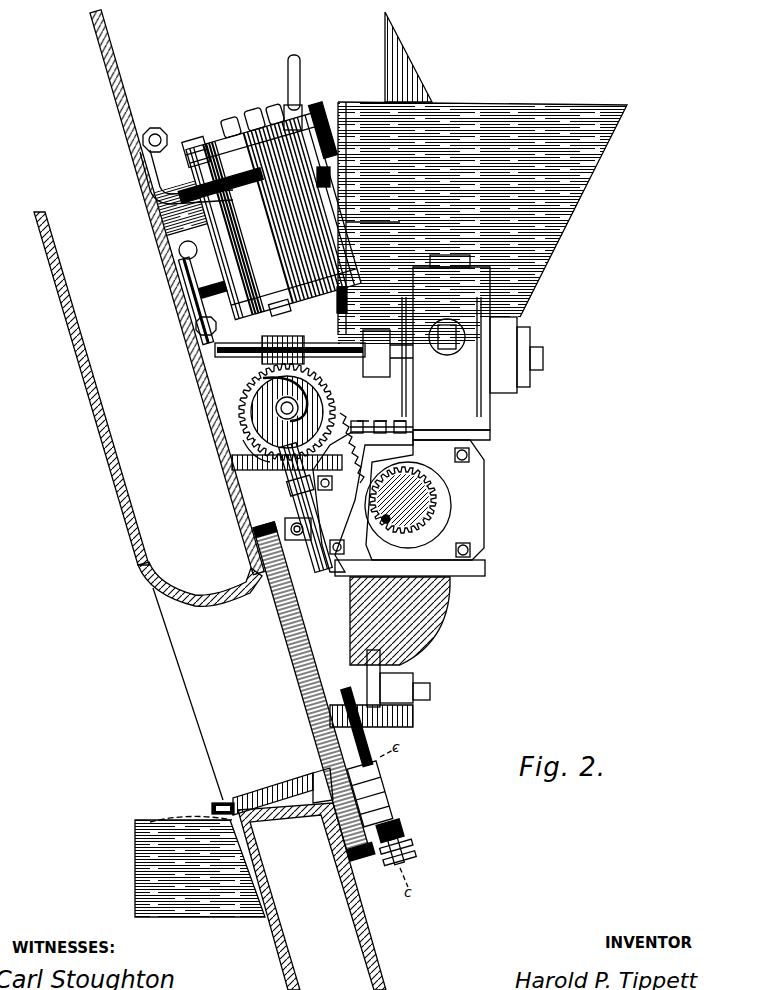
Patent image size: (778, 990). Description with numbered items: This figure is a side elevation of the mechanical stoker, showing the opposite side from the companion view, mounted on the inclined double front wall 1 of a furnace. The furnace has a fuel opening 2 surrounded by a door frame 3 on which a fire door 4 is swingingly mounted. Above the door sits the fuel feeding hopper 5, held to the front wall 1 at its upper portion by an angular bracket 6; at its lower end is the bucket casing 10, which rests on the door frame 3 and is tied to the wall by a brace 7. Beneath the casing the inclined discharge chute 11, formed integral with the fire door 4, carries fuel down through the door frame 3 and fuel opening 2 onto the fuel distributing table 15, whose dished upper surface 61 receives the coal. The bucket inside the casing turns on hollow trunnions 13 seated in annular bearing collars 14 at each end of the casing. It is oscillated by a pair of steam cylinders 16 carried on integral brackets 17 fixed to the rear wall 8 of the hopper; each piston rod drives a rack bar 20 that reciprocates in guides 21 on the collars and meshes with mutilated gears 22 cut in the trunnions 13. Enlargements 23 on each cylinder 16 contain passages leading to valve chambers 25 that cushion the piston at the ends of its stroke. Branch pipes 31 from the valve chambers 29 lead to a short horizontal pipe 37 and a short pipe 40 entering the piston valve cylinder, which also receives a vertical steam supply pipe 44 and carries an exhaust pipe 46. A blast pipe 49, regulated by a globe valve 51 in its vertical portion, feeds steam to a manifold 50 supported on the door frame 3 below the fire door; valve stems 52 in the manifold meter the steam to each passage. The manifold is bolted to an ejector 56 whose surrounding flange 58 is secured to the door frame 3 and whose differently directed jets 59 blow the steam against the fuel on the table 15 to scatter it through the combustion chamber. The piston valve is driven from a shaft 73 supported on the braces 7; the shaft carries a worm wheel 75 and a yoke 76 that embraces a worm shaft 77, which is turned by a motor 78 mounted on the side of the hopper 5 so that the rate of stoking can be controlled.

The double front wall 1 is at (210, 382).
The fuel opening 2 is at (269, 789).
The door frame 3 is at (284, 648).
The fire door 4 is at (358, 665).
The fuel feeding hopper 5 is at (482, 178).
The angular bracket 6 is at (175, 214).
The brace 7 is at (292, 478).
The rear wall of the hopper 8 is at (346, 262).
The bucket casing 10 is at (470, 497).
The discharge chute 11 is at (425, 614).
The hollow trunnions 13 is at (418, 505).
The annular bearing collars 14 is at (432, 478).
The fuel distributing table 15 is at (152, 860).
The steam cylinders 16 is at (264, 219).
The integral brackets 17 is at (385, 150).
The rack bars 20 is at (360, 444).
The guides 21 is at (363, 502).
The mutilated gears 22 is at (382, 520).
The enlargements 23 is at (395, 220).
The valve chambers 25 is at (324, 132).
The valve chambers 29 is at (238, 124).
The branch pipes 31 is at (165, 124).
The short horizontal pipe 37 is at (185, 278).
The short pipe 40 is at (182, 160).
The vertical steam supply pipe 44 is at (285, 104).
The exhaust pipe 46 is at (300, 78).
The blast pipe 49 is at (215, 292).
The manifold 50 is at (378, 784).
The globe valve 51 is at (285, 530).
The valve stems 52 is at (395, 850).
The ejector 56 is at (268, 800).
The surrounding flange 58 is at (300, 778).
The jets 59 is at (212, 806).
The dished upper surface 61 is at (165, 820).
The shaft 73 is at (287, 412).
The worm wheel 75 is at (252, 448).
The yoke 76 is at (252, 416).
The worm shaft 77 is at (265, 390).
The motor 78 is at (455, 380).